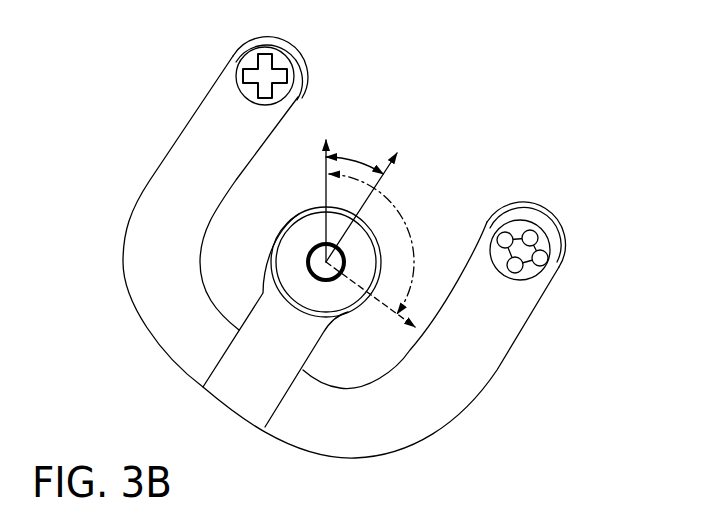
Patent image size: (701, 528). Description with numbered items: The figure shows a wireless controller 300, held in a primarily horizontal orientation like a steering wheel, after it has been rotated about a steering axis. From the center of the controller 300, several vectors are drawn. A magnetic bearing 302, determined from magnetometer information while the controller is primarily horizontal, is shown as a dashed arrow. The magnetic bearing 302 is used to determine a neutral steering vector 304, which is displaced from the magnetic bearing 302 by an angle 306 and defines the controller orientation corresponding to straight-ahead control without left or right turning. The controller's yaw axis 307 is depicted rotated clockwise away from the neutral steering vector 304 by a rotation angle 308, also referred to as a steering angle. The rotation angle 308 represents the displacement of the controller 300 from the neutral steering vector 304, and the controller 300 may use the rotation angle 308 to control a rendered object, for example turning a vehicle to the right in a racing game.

The wireless controller 300 is at (440, 86).
The magnetic bearing 302 is at (408, 323).
The neutral steering vector 304 is at (325, 194).
The angle 306 is at (408, 226).
The yaw axis 307 is at (367, 198).
The rotation angle 308 is at (347, 156).